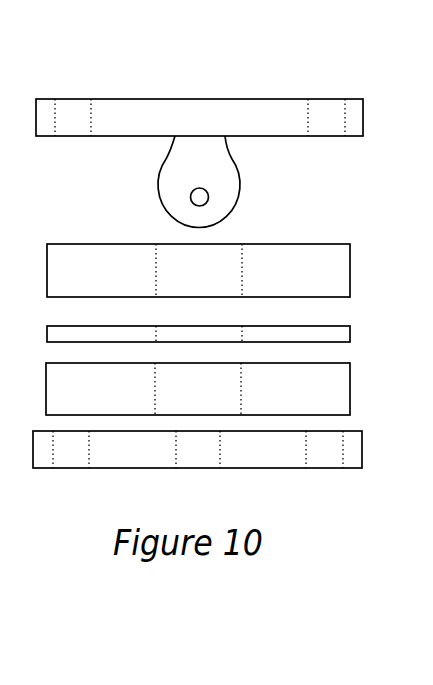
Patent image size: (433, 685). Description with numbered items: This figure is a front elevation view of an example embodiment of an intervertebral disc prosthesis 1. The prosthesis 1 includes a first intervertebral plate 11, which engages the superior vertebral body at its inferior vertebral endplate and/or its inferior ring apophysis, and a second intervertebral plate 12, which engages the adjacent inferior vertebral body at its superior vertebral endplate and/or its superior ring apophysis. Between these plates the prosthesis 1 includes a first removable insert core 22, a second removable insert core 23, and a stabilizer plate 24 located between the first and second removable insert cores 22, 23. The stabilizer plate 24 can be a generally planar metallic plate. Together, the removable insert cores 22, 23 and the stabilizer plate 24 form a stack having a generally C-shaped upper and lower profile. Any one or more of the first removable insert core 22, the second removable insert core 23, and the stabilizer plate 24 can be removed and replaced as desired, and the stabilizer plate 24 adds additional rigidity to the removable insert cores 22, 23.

The intervertebral disc prosthesis 1 is at (274, 76).
The first intervertebral plate 11 is at (363, 120).
The second intervertebral plate 12 is at (362, 452).
The first removable insert core 22 is at (351, 274).
The second removable insert core 23 is at (351, 393).
The stabilizer plate 24 is at (351, 332).